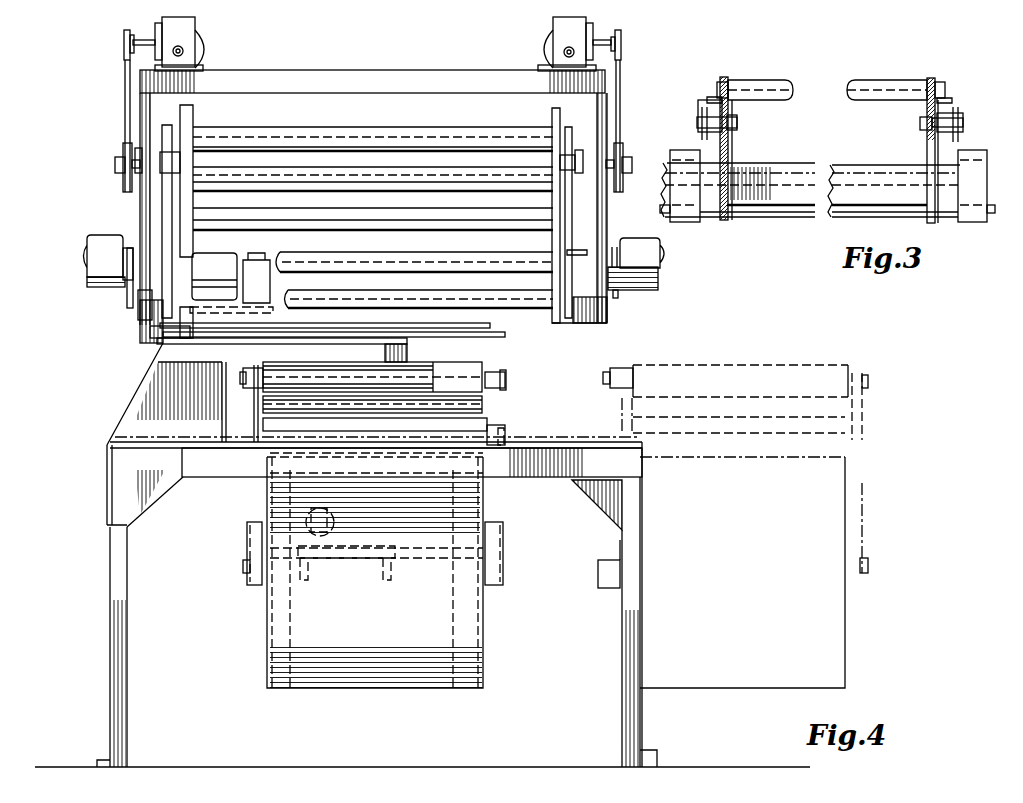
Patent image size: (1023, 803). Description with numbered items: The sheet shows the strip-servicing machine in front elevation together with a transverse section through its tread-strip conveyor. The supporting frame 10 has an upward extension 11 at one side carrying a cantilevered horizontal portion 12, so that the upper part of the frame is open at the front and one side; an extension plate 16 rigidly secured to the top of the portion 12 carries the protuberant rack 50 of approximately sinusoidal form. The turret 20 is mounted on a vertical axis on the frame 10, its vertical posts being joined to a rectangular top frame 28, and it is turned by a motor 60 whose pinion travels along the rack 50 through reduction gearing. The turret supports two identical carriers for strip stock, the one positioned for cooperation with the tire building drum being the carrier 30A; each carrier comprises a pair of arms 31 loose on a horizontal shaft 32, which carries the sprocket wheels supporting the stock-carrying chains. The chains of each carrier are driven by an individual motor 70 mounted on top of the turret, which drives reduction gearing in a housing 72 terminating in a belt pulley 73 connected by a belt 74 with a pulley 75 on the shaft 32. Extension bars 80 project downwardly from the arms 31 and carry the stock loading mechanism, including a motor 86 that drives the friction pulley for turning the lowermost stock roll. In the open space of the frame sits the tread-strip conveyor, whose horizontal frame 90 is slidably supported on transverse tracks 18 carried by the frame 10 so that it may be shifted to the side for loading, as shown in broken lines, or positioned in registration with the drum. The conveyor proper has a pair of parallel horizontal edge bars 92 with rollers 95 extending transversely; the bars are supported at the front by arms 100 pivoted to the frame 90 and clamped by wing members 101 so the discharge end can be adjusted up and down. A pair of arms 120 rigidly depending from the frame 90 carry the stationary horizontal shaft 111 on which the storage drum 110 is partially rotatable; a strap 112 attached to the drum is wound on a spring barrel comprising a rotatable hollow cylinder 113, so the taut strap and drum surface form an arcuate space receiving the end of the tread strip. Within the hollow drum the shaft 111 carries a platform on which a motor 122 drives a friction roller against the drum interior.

In FIG. 4, the supporting frame 10 is at (148, 500).
In FIG. 4, the upward extension 11 is at (217, 407).
In FIG. 4, the cantilevered horizontal portion 12 is at (407, 350).
In FIG. 4, the extension plate 16 is at (495, 344).
In FIG. 4, the transverse tracks 18 is at (523, 442).
In FIG. 4, the turret 20 is at (130, 206).
In FIG. 4, the rectangular top frame 28 is at (372, 81).
In FIG. 4, the carrier for strip stock 30A is at (512, 106).
In FIG. 4, the arms 31 is at (160, 218).
In FIG. 4, the horizontal shaft 32 is at (115, 165).
In FIG. 4, the protuberant rack 50 is at (507, 333).
In FIG. 4, the motor 60 is at (220, 260).
In FIG. 4, the individual motor 70 is at (203, 49).
In FIG. 4, the housing 72 is at (372, 44).
In FIG. 4, the belt pulley 73 is at (124, 37).
In FIG. 4, the belt 74 is at (125, 83).
In FIG. 4, the pulley 75 is at (125, 146).
In FIG. 4, the extension bars 80 is at (124, 290).
In FIG. 4, the motor 86 is at (100, 253).
In FIG. 4, the horizontal frame 90 is at (478, 437).
In FIG. 3, the horizontal frame 90 is at (810, 190).
In FIG. 3, the parallel horizontal bars 92 is at (717, 98).
In FIG. 4, the rollers 95 is at (473, 413).
In FIG. 3, the rollers 95 is at (880, 87).
In FIG. 3, the arms 100 is at (934, 147).
In FIG. 3, the wing members 101 is at (963, 121).
In FIG. 4, the drum 110 is at (863, 610).
In FIG. 4, the stationary horizontal shaft 111 is at (242, 567).
In FIG. 4, the strap 112 is at (435, 362).
In FIG. 4, the rotatable hollow cylinder 113 is at (473, 371).
In FIG. 4, the arms 120 is at (245, 538).
In FIG. 4, the motor 122 is at (337, 527).